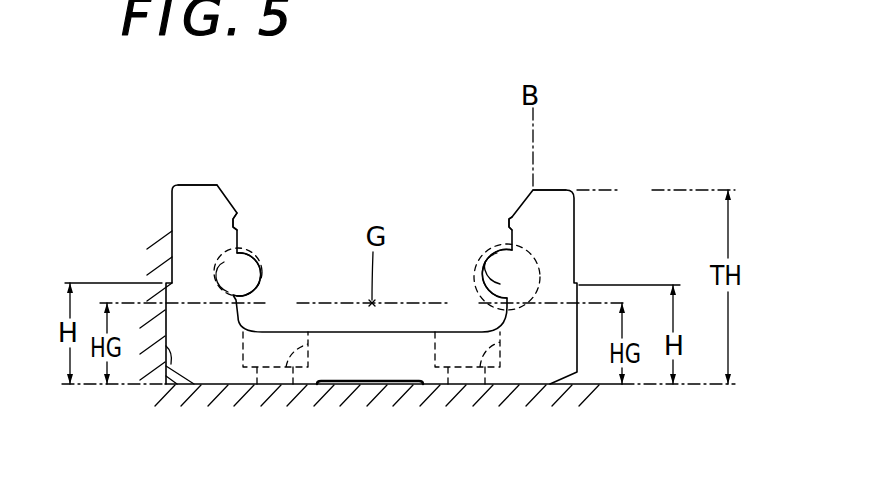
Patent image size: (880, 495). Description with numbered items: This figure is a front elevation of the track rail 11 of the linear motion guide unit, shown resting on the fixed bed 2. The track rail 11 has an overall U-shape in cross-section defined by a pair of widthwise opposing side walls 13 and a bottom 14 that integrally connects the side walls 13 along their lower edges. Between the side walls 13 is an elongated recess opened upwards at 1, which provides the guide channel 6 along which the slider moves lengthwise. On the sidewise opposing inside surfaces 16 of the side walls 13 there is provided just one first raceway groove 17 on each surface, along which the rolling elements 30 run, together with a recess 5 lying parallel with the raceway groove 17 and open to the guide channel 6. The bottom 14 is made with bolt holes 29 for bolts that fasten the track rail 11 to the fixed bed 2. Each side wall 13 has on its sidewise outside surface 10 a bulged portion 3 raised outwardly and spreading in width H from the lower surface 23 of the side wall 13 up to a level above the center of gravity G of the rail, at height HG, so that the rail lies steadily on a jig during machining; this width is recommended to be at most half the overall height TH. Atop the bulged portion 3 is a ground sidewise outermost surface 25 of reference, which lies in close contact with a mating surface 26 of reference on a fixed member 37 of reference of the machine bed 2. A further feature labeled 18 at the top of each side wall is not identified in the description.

The elongated recess 1 is at (402, 220).
The fixed bed 2 is at (336, 440).
The bulged portion 3 is at (170, 322).
The recess 5 is at (238, 223).
The guide channel 6 is at (340, 283).
The outside surface 10 is at (170, 241).
The track rail 11 is at (577, 198).
The side walls 13 is at (195, 215).
The bottom 14 is at (387, 368).
The inside surfaces 16 is at (240, 236).
The first raceway grooves 17 is at (246, 290).
The top surface 18 is at (199, 185).
The lower surface 23 is at (523, 388).
The surface of reference 25 is at (170, 321).
The mating surface of reference 26 is at (167, 355).
The bolt holes 29 is at (278, 386).
The rolling elements 30 is at (252, 270).
The fixed member of reference 37 is at (156, 274).